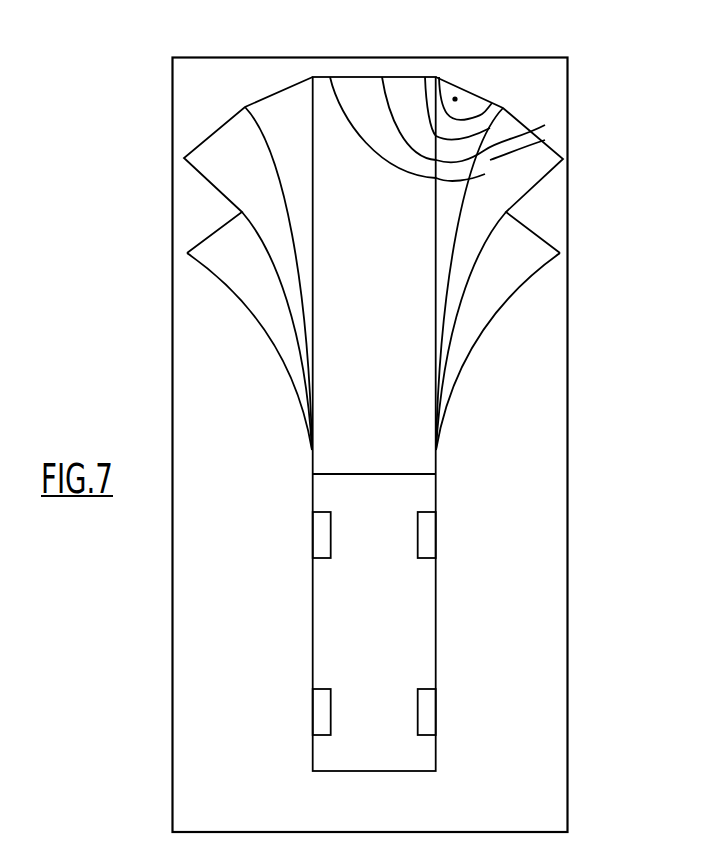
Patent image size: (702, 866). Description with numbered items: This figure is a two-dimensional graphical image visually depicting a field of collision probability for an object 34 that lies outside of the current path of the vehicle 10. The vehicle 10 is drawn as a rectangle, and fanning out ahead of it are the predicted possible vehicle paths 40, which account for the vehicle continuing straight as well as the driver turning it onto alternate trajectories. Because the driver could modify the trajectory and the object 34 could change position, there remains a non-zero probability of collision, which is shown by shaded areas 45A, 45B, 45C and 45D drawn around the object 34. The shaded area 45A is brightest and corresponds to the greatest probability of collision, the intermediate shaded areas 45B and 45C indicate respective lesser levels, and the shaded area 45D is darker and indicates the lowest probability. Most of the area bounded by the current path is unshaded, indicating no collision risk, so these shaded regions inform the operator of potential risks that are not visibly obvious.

The vehicle 10 is at (405, 614).
The object 34 is at (510, 70).
The possible vehicle paths 40 is at (437, 343).
The shaded area 45A is at (457, 100).
The shaded area 45B is at (482, 128).
The shaded area 45C is at (460, 172).
The shaded area 45D is at (515, 180).